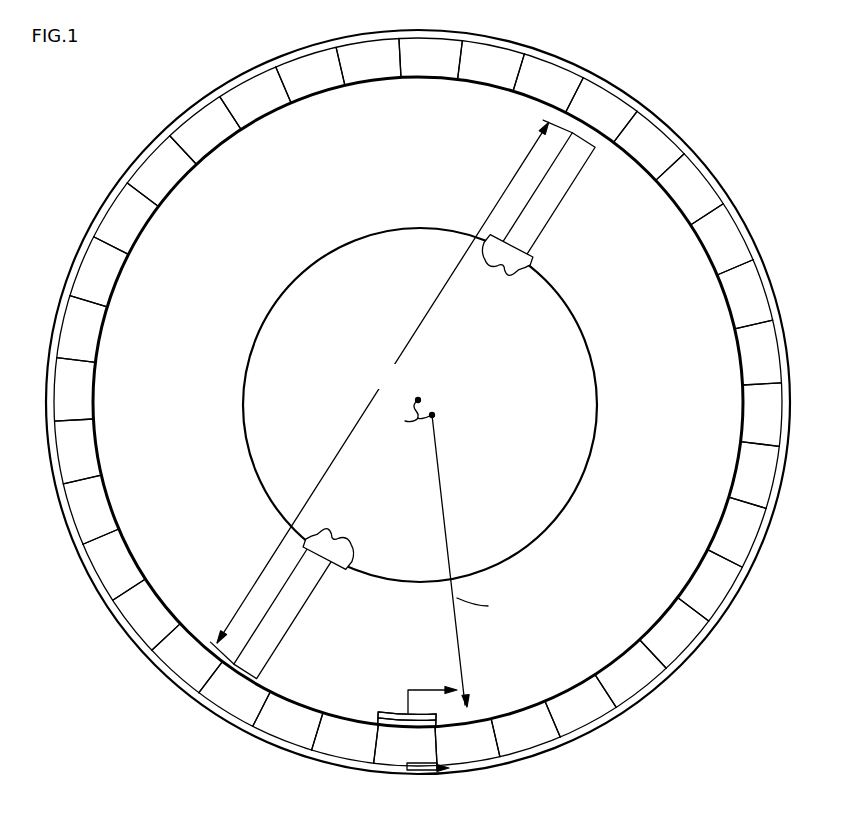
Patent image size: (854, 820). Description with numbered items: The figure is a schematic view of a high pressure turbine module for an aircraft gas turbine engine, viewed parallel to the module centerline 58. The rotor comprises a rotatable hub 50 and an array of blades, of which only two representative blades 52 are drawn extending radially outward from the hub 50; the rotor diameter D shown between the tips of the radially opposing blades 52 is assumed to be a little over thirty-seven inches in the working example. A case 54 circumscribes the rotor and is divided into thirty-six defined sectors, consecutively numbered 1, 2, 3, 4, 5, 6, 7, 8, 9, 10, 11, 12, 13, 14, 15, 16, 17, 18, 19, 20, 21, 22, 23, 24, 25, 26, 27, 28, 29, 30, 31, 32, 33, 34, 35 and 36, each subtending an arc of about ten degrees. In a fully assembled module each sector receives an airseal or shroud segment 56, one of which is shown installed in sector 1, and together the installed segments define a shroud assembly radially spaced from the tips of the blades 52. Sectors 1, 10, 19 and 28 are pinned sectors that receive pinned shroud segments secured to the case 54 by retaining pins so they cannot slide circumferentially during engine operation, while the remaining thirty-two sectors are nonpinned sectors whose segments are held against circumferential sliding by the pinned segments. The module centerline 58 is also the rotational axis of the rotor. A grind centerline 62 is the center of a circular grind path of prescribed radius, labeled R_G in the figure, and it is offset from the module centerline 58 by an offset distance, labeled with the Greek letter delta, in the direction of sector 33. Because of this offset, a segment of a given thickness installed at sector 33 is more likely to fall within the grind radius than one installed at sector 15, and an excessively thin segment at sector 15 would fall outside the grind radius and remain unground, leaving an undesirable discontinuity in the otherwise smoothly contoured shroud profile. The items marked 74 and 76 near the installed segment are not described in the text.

The sector 1 is at (405, 764).
The sector 2 is at (384, 733).
The sector 3 is at (288, 733).
The sector 4 is at (235, 702).
The sector 5 is at (185, 662).
The sector 6 is at (141, 615).
The sector 7 is at (105, 564).
The sector 8 is at (79, 509).
The sector 9 is at (63, 451).
The sector 10 is at (56, 389).
The sector 11 is at (66, 329).
The sector 12 is at (87, 272).
The sector 13 is at (118, 218).
The sector 14 is at (157, 167).
The sector 15 is at (204, 123).
The sector 16 is at (255, 87).
The sector 17 is at (310, 61).
The sector 18 is at (368, 44).
The sector 19 is at (430, 39).
The sector 20 is at (491, 50).
The sector 21 is at (548, 70).
The sector 22 is at (602, 101).
The sector 23 is at (653, 141).
The sector 24 is at (697, 188).
The sector 25 is at (733, 239).
The sector 26 is at (759, 294).
The sector 27 is at (776, 352).
The sector 28 is at (781, 414).
The sector 29 is at (770, 475).
The sector 30 is at (750, 532).
The sector 31 is at (719, 586).
The sector 32 is at (679, 636).
The sector 33 is at (631, 680).
The sector 34 is at (580, 716).
The sector 35 is at (525, 742).
The sector 36 is at (467, 759).
The rotatable hub 50 is at (583, 456).
The blades 52 is at (548, 207).
The case 54 is at (746, 206).
The shroud segment 56 is at (400, 708).
The module centerline 58 is at (418, 399).
The grind centerline 62 is at (434, 415).
The lower plate layer 74 is at (377, 720).
The upper plate layer 76 is at (380, 713).